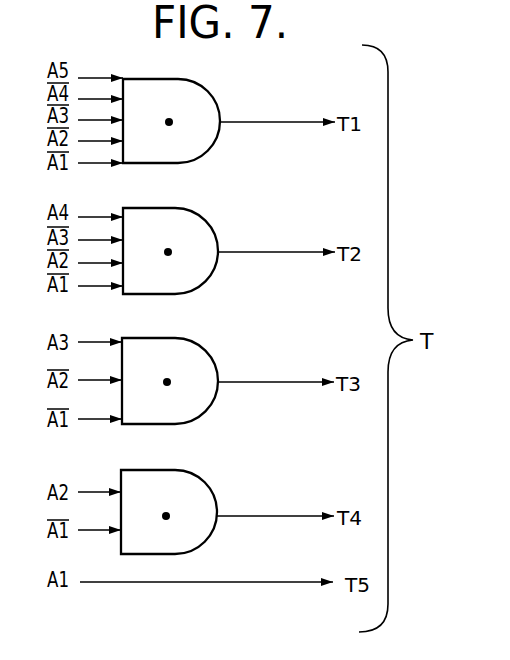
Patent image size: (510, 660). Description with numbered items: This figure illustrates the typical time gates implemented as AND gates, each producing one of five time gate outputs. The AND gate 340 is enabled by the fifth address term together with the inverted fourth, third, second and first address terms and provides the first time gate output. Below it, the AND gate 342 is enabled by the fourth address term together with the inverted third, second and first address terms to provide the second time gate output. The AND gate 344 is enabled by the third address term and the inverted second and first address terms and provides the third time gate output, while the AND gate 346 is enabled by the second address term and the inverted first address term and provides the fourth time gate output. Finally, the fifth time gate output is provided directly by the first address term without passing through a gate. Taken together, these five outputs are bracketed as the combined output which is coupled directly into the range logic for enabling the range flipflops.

The AND gate 340 is at (202, 162).
The AND gate 342 is at (213, 277).
The AND gate 344 is at (213, 408).
The AND gate 346 is at (207, 545).